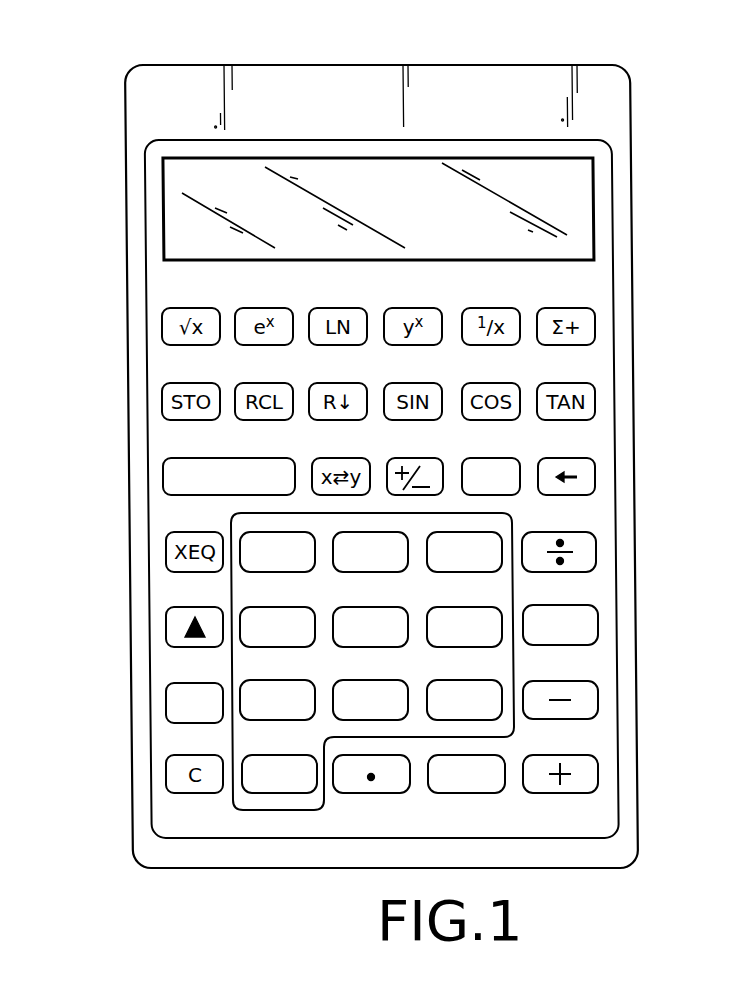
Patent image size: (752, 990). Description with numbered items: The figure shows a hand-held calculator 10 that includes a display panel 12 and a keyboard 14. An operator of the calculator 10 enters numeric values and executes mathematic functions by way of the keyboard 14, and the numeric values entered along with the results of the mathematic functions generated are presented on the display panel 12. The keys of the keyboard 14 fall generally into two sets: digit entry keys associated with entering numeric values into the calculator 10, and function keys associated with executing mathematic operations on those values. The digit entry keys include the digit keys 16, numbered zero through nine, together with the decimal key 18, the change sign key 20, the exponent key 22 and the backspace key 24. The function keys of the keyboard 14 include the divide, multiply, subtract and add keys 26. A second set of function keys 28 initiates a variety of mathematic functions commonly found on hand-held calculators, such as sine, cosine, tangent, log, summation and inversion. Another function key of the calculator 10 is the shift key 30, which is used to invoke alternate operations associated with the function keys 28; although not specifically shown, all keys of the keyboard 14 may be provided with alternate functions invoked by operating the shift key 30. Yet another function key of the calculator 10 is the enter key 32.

The hand-held calculator 10 is at (153, 50).
The display panel 12 is at (165, 202).
The keyboard 14 is at (118, 300).
The digit keys 16 is at (226, 587).
The decimal key 18 is at (365, 795).
The change sign key 20 is at (430, 457).
The exponent key 22 is at (518, 495).
The backspace key 24 is at (595, 477).
The divide, multiply, subtract and add keys 26 is at (596, 548).
The second set of function keys 28 is at (517, 275).
The shift key 30 is at (167, 628).
The enter key 32 is at (183, 458).